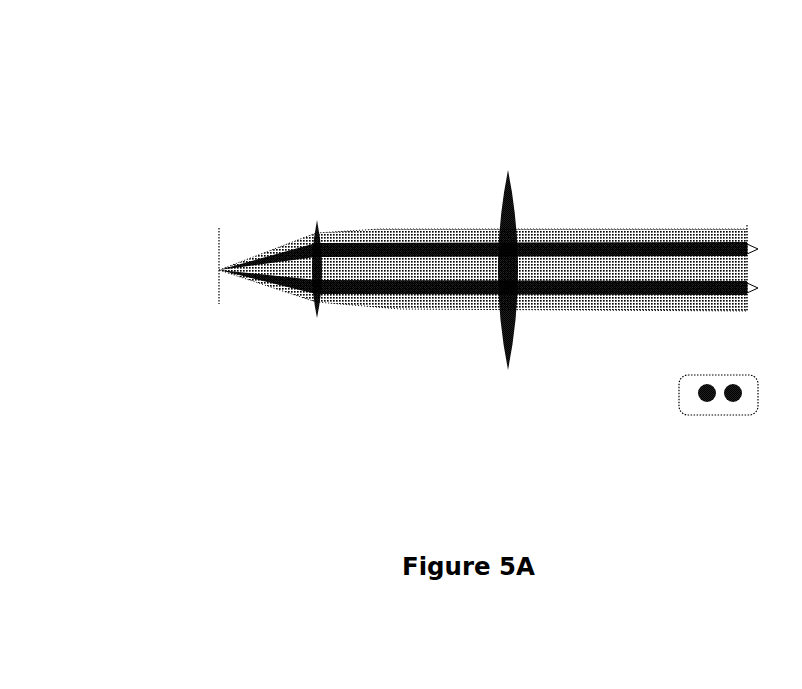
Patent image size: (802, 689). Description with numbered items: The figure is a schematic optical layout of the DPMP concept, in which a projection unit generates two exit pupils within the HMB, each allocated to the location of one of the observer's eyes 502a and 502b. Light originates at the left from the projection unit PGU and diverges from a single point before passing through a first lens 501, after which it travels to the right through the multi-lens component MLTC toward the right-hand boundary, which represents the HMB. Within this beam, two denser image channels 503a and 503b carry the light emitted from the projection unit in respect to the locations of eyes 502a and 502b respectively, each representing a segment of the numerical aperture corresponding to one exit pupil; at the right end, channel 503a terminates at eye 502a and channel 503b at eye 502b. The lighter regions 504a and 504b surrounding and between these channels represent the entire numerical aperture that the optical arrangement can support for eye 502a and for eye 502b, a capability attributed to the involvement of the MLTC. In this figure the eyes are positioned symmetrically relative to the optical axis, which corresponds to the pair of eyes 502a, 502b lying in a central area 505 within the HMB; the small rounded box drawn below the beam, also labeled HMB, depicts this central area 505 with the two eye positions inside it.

The first lens L1 (collimating lens) 501 is at (317, 213).
The observer eye 502a is at (745, 244).
The observer eye 502b is at (746, 283).
The image channel 503a is at (416, 246).
The image channel 503b is at (385, 284).
The numerical aperture area 504a is at (485, 257).
The numerical aperture area 504b is at (443, 281).
The central area 505 is at (720, 403).
The picture generation unit PGU is at (216, 304).
The element MLTC is at (508, 165).
The HMB region HMB is at (746, 222).